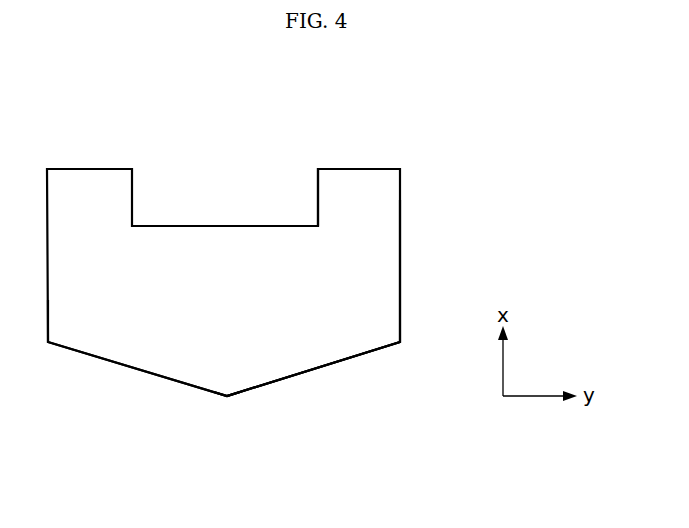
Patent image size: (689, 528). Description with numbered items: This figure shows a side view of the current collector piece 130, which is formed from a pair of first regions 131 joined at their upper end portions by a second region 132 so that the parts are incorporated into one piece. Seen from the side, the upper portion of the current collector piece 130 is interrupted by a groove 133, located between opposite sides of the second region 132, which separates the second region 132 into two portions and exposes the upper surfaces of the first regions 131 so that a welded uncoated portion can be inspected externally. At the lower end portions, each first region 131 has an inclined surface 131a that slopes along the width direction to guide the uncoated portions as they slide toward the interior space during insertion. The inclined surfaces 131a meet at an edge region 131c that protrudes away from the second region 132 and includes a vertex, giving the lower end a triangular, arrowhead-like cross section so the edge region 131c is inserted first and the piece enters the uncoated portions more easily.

The current collector piece 130 is at (447, 143).
The first region 131 is at (382, 276).
The inclined surface 131a is at (313, 371).
The edge region 131c is at (227, 397).
The second region 132 is at (361, 182).
The groove 133 is at (225, 194).